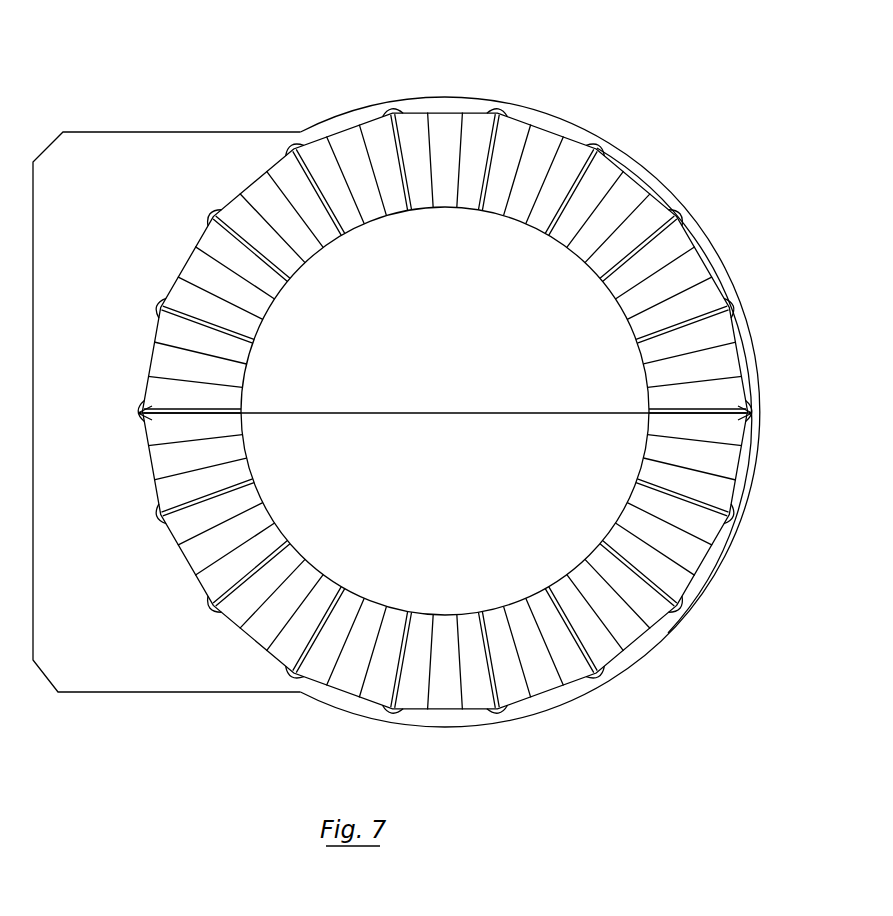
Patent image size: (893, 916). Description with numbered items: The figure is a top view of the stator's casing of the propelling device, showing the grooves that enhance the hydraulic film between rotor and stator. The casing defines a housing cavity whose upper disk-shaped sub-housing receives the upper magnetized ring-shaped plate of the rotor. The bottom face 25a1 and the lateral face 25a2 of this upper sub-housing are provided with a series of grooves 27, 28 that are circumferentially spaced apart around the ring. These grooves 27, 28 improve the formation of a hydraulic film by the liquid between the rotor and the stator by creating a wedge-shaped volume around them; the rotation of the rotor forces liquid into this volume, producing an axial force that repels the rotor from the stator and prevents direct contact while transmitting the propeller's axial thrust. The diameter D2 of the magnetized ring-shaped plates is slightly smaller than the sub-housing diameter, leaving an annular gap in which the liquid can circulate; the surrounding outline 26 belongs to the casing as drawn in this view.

The housing 26 is at (684, 632).
The groove 27 is at (373, 102).
The groove 28 is at (399, 218).
The bottom face of the upper sub-housing 25a1 is at (663, 175).
The lateral face of the upper sub-housing 25a2 is at (443, 96).
The diameter of the upper and lower magnetized ring-shaped plates D2 is at (445, 399).